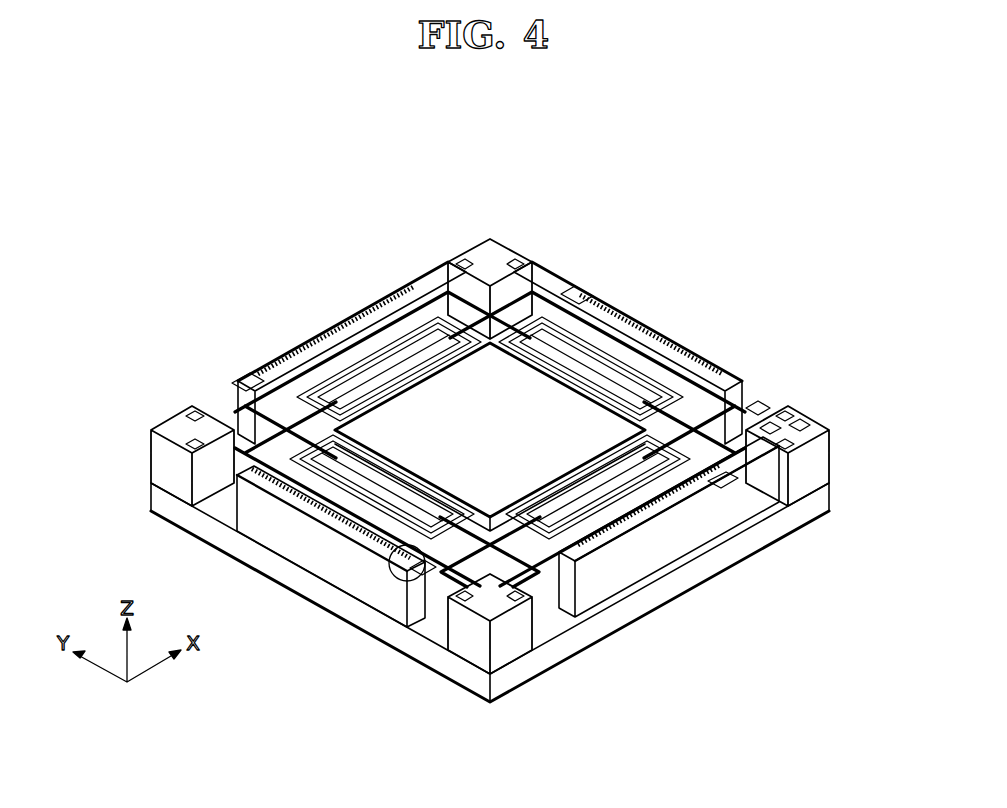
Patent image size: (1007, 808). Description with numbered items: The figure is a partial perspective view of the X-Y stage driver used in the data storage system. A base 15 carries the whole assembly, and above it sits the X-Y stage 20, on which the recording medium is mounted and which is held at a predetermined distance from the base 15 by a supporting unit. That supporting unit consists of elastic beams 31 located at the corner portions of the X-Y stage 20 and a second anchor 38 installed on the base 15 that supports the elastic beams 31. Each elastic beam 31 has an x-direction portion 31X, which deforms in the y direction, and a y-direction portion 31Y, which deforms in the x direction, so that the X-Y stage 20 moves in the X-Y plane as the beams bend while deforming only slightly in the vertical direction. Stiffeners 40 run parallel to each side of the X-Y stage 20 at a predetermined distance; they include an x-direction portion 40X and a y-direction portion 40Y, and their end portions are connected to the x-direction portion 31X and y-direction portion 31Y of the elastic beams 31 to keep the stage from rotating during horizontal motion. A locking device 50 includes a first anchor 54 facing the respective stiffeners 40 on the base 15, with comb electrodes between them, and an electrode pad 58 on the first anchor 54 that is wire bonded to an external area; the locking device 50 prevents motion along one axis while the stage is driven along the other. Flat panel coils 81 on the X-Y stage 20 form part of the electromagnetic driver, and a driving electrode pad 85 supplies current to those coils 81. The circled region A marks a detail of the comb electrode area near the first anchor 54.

The base 15 is at (158, 507).
The X-Y stage 20 is at (677, 430).
The elastic beams 31 is at (862, 363).
The x-direction portion 31X is at (768, 440).
The y-direction portion 31Y is at (762, 405).
The second anchor 38 is at (825, 471).
The stiffeners 40 is at (662, 244).
The x-direction portion 40X is at (480, 306).
The y-direction portion 40Y is at (627, 345).
The locking device 50 is at (272, 652).
The first anchor 54 is at (373, 583).
The electrode pad 58 is at (390, 563).
The flat panel coils 81 is at (397, 347).
The driving electrode pad 85 is at (193, 405).
The detail region A is at (407, 581).